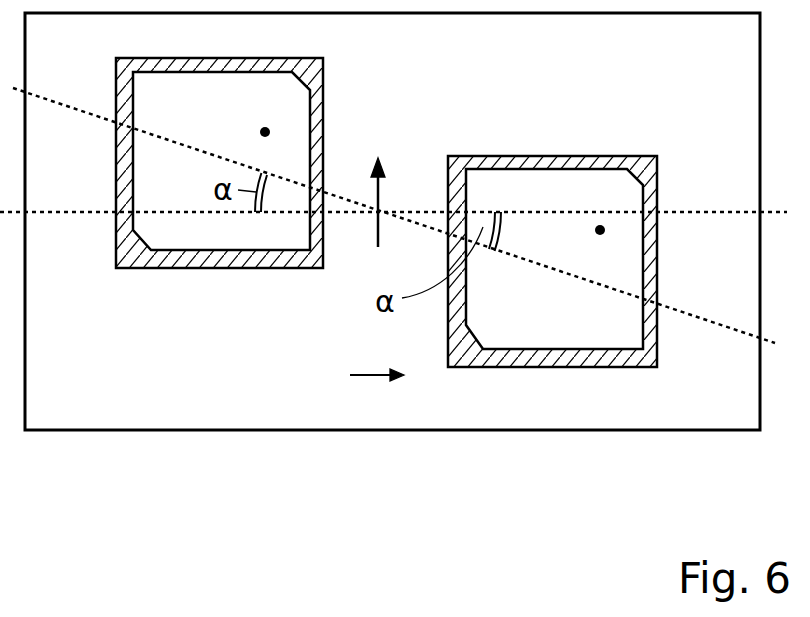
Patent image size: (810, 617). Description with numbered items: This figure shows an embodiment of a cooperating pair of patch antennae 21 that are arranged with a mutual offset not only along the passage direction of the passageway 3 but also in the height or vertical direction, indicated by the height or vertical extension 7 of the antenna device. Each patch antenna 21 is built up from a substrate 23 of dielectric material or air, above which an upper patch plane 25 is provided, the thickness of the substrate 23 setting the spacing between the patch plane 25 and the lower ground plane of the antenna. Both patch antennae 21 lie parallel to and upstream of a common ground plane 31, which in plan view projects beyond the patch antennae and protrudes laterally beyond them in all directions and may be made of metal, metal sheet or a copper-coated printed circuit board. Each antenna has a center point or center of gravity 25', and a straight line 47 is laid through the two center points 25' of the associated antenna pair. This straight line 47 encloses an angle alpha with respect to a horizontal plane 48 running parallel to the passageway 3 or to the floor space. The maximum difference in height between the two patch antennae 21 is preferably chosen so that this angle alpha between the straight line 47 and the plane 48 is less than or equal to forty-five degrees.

The passageway 3 is at (365, 378).
The height or vertical extension 7 is at (382, 186).
The patch antenna 21 is at (391, 287).
The substrate 23 is at (223, 262).
The upper patch plane 25 is at (344, 287).
The center point of patch antenna 25' is at (498, 178).
The ground plane 31 is at (237, 405).
The straight line 47 is at (706, 326).
The plane 48 is at (704, 212).